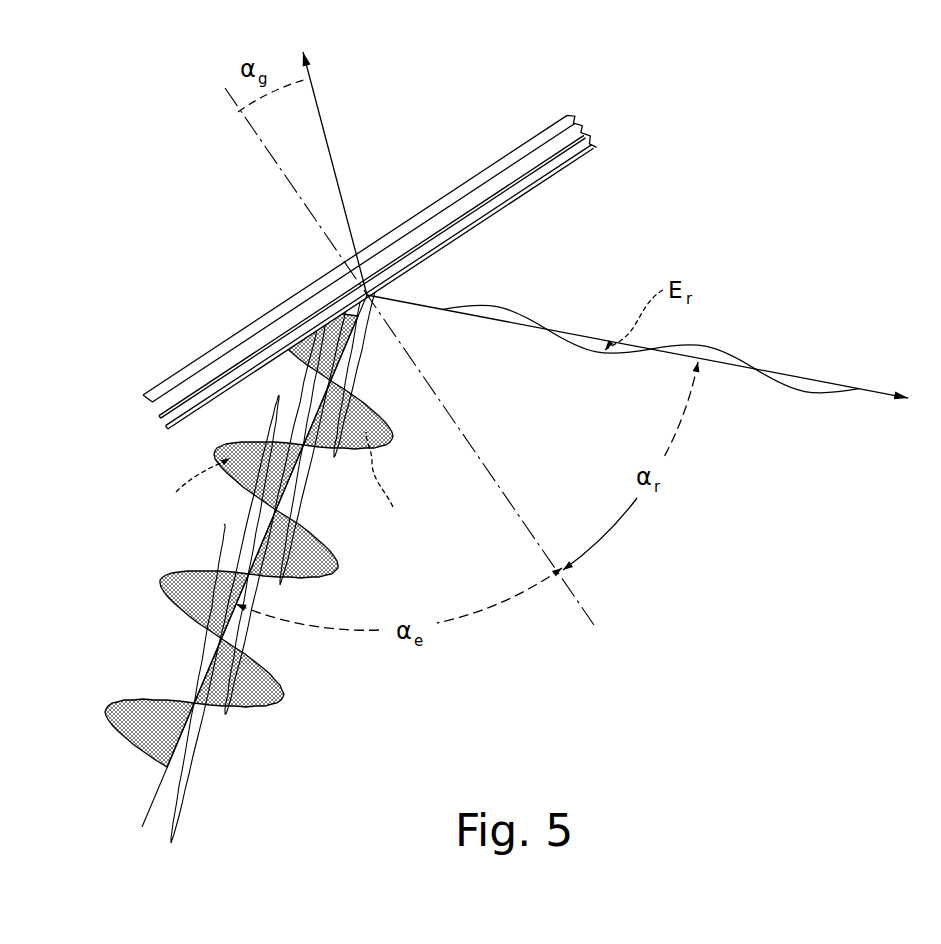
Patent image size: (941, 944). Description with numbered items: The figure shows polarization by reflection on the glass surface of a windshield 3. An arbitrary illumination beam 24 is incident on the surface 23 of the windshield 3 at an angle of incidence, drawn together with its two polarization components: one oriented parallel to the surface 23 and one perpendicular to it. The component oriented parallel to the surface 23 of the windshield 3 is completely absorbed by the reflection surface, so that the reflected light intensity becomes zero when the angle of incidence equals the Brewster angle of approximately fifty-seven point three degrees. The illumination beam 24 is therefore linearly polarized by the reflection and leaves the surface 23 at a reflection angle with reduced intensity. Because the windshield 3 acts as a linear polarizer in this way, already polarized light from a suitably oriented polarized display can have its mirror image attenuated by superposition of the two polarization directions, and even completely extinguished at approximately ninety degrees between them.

The windshield 3 is at (557, 172).
The surface 23 is at (432, 259).
The illumination beam 24 is at (197, 730).